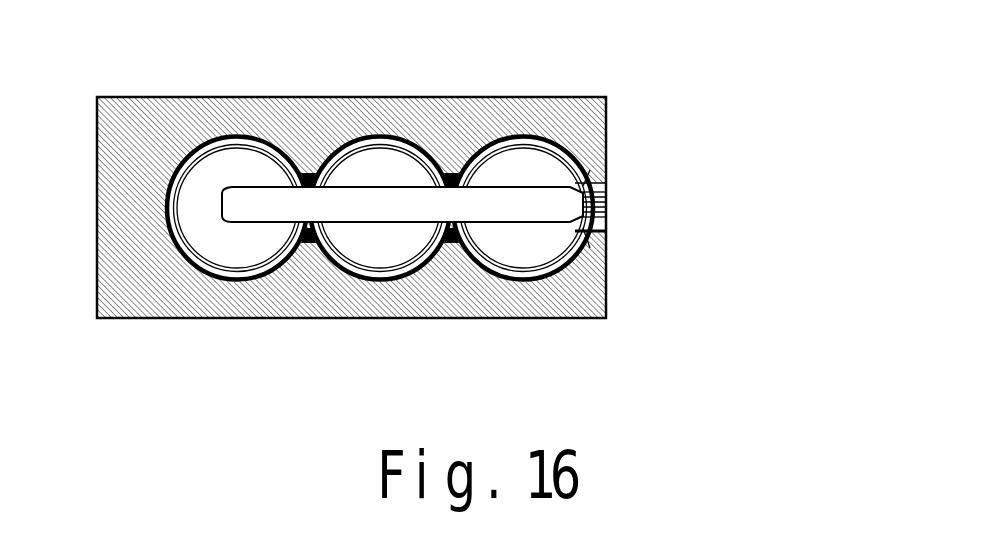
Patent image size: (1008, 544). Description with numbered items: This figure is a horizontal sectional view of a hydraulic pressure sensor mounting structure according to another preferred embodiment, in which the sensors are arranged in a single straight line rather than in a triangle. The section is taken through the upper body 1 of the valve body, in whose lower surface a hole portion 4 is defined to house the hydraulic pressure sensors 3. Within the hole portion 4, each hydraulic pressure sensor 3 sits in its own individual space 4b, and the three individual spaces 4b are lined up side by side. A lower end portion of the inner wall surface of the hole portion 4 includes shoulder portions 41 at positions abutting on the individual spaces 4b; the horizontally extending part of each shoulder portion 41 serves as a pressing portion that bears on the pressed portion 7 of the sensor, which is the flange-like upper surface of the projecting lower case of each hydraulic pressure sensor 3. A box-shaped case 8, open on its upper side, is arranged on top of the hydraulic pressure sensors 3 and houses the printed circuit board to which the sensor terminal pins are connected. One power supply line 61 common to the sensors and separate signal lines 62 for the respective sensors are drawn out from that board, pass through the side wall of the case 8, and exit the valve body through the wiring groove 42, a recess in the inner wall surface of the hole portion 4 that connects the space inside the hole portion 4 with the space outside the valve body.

The upper body 1 is at (110, 125).
The hydraulic pressure sensor 3 is at (222, 172).
The hole portion 4 is at (170, 196).
The individual space 4b is at (213, 283).
The shoulder portion 41 is at (255, 140).
The wiring groove 42 is at (606, 229).
The pressed portion 7 is at (600, 182).
The case 8 is at (505, 195).
The power supply line 61 is at (606, 188).
The signal line 62 is at (606, 205).